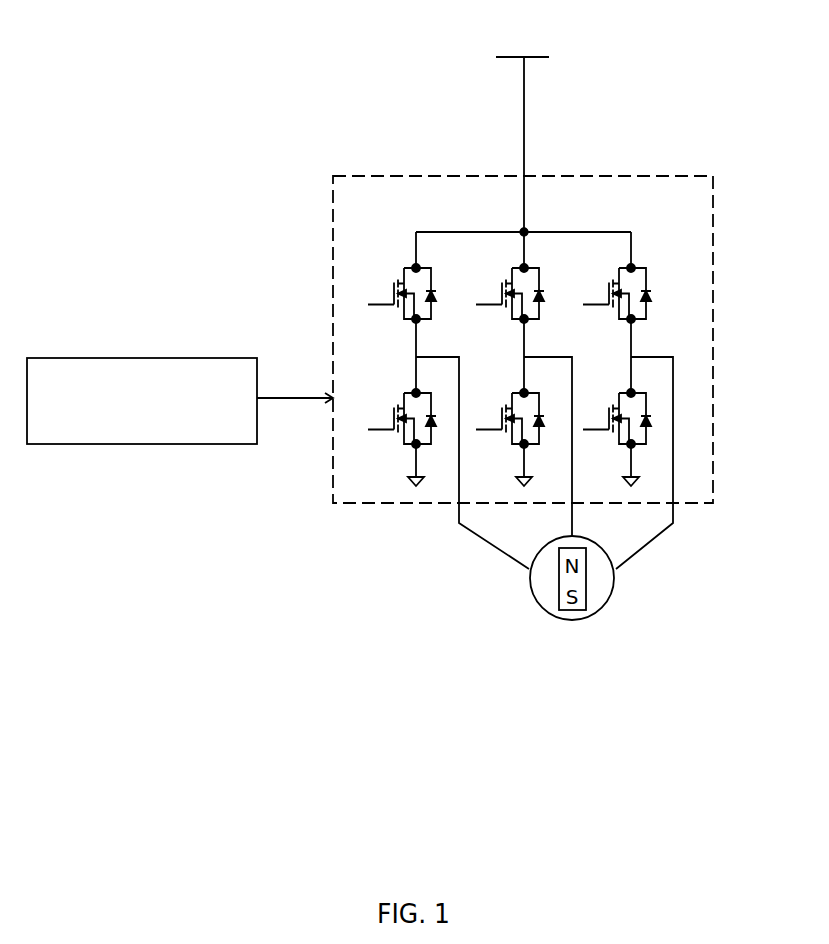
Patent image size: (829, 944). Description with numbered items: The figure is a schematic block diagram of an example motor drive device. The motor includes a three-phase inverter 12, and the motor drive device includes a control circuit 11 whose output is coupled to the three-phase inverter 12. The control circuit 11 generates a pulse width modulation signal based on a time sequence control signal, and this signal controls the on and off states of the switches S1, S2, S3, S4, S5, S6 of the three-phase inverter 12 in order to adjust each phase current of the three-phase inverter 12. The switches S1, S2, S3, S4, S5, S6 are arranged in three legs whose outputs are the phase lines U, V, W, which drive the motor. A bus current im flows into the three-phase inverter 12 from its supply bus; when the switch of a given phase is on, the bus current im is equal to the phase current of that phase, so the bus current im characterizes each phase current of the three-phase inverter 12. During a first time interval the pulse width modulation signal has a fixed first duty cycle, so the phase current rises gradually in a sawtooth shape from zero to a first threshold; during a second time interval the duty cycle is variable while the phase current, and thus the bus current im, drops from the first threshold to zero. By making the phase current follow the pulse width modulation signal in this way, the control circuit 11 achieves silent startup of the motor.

The control circuit 11 is at (155, 422).
The three-phase inverter 12 is at (566, 313).
The switch S1 is at (400, 293).
The switch S2 is at (400, 418).
The switch S3 is at (508, 293).
The switch S4 is at (508, 418).
The switch S5 is at (615, 293).
The switch S6 is at (615, 418).
The phase U output U is at (460, 457).
The phase V output V is at (538, 441).
The phase W output W is at (638, 457).
The bus current im is at (541, 70).